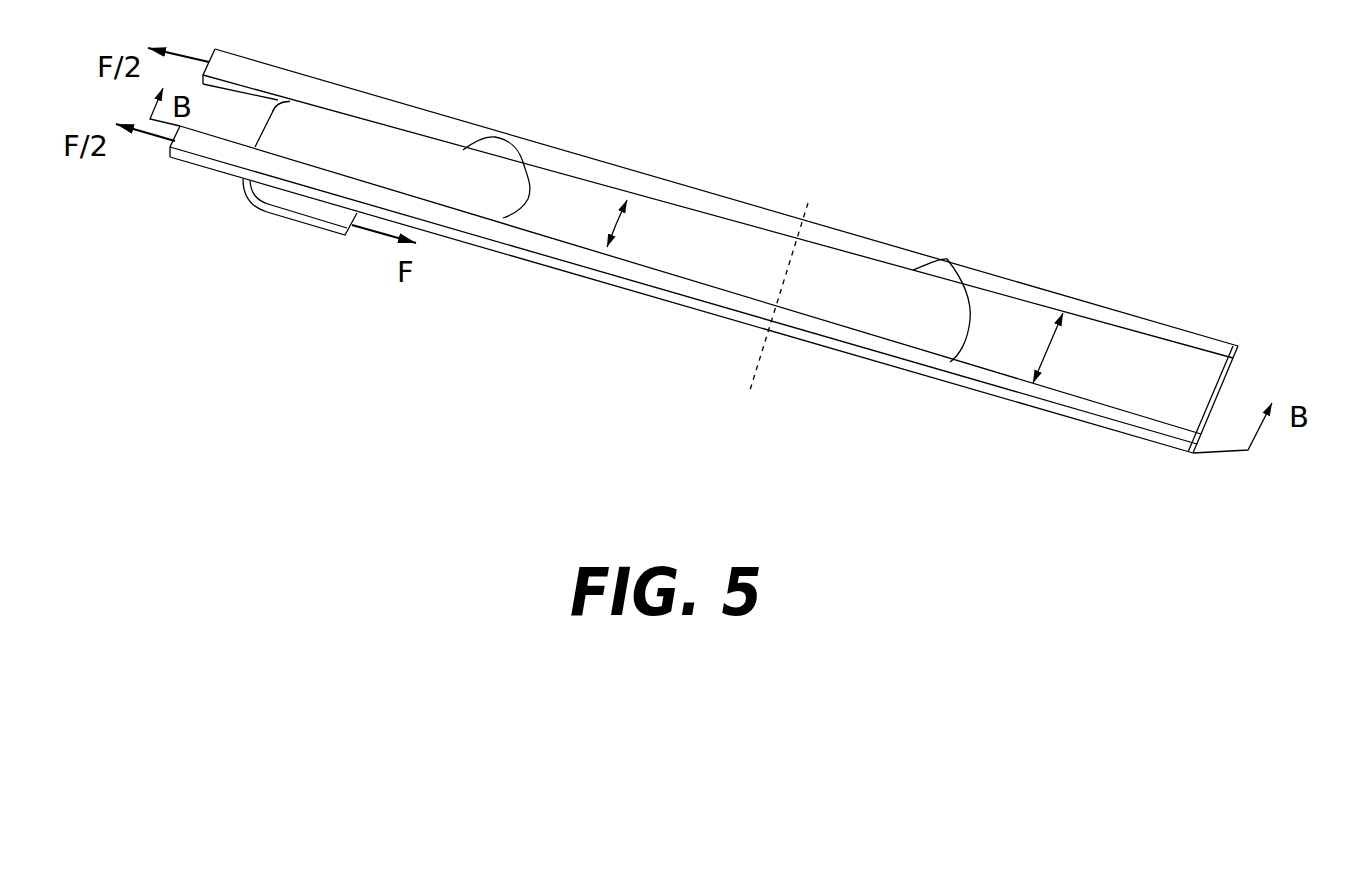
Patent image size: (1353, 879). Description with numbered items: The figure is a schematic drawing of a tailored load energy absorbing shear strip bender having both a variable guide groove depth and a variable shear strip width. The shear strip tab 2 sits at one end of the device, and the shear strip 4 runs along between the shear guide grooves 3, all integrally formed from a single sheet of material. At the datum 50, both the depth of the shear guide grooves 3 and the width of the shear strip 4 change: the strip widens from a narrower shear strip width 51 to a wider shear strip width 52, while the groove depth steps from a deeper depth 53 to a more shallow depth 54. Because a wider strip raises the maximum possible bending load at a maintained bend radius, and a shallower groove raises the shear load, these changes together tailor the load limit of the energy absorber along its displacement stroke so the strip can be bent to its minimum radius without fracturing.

The shear strip tab 2 is at (282, 200).
The shear guide grooves 3 is at (1163, 427).
The shear strip 4 is at (1202, 383).
The datum 50 is at (767, 324).
The narrower shear strip width 51 is at (618, 224).
The wider shear strip width 52 is at (1045, 347).
The deeper depth 53 is at (495, 137).
The more shallow depth 54 is at (947, 259).